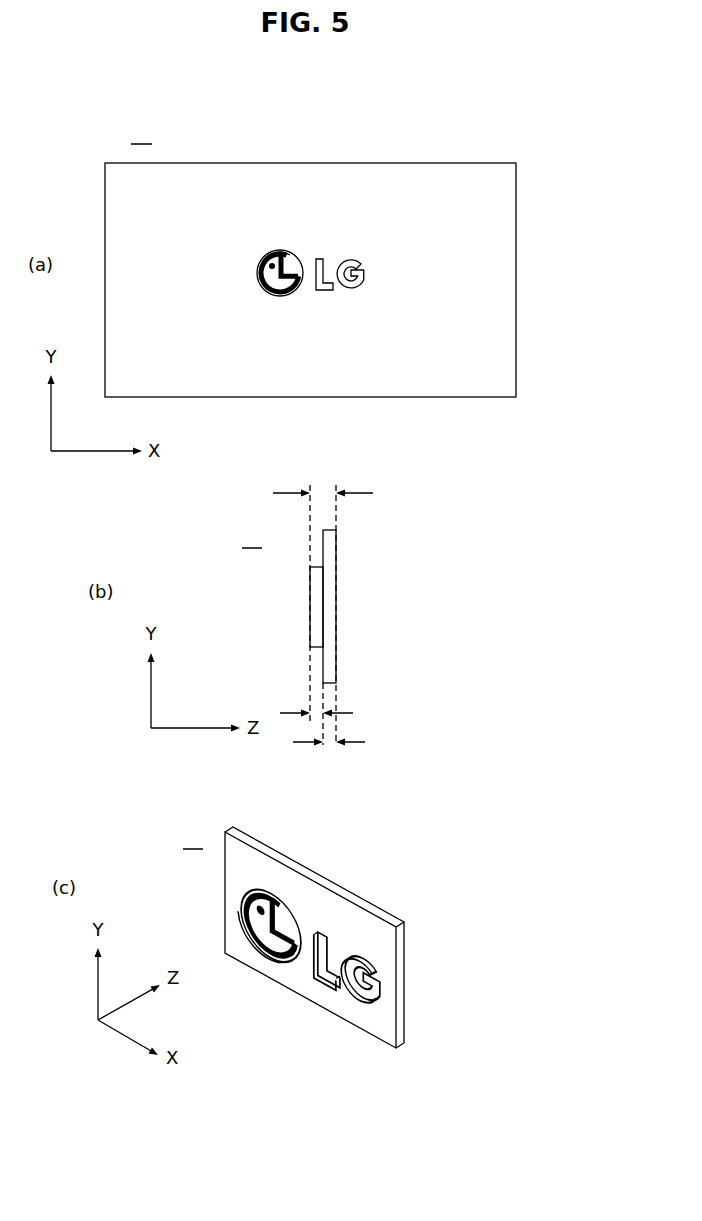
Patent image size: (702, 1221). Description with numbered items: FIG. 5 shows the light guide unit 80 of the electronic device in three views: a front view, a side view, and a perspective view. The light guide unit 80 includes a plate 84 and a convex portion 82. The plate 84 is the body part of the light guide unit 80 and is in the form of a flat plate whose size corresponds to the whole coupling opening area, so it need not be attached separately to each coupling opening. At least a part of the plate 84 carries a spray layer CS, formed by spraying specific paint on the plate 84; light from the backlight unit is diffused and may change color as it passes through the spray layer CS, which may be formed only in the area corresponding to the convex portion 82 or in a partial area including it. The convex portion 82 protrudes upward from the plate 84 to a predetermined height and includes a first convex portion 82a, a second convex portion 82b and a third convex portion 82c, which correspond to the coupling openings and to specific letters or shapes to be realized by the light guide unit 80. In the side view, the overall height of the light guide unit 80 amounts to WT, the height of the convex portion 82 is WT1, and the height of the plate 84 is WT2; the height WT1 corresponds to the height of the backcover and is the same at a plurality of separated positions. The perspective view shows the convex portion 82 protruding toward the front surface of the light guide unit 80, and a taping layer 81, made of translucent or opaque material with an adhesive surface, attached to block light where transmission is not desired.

The light guide unit 80 is at (197, 485).
The taping layer 81 is at (258, 268).
The convex portion 82 is at (258, 113).
The first convex portion 82a is at (283, 252).
The second convex portion 82b is at (319, 257).
The third convex portion 82c is at (355, 257).
The plate 84 is at (505, 184).
The spray layer CS is at (504, 266).
The overall height of the light guide unit WT is at (323, 479).
The height of the convex portion WT1 is at (309, 699).
The height of the plate WT2 is at (329, 758).